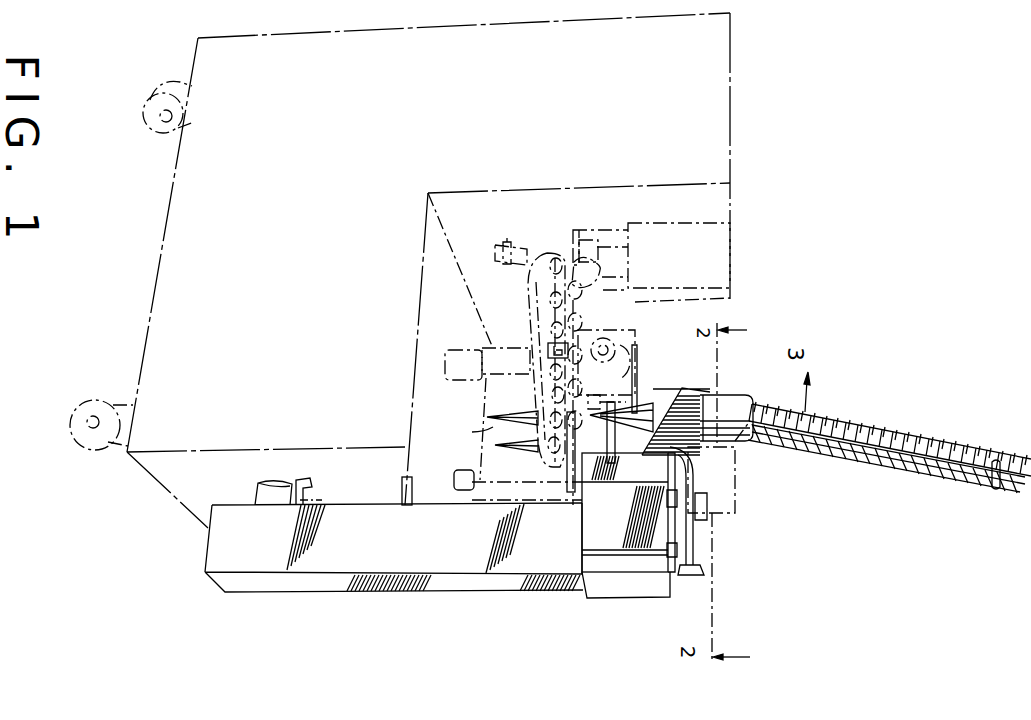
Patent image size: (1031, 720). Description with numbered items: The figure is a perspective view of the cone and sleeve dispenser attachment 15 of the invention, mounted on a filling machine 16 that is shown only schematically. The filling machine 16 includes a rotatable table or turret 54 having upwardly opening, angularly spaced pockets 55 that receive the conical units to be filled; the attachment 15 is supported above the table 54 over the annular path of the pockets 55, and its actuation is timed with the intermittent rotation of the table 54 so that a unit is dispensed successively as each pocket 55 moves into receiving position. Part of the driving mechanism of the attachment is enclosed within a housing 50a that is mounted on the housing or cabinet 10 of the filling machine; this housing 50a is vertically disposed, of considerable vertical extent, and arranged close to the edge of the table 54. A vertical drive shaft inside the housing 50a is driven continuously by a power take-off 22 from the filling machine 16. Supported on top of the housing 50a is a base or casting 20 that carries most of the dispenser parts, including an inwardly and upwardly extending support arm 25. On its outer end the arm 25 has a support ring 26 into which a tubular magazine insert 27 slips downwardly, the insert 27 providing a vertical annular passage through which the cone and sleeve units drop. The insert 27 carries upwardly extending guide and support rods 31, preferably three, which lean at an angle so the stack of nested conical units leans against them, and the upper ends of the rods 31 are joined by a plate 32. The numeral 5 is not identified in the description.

The housing or cabinet 10 is at (180, 326).
The filling machine 16 is at (192, 222).
The power take-off 22 is at (254, 496).
The rotatable table or turret 54 is at (530, 328).
The pockets 55 is at (558, 470).
The housing 50a is at (455, 586).
The base or casting 20 is at (610, 588).
The support arm 25 is at (668, 404).
The support ring 26 is at (688, 398).
The tubular magazine insert 27 is at (746, 396).
The dispenser attachment 15 is at (738, 445).
The conveyor 5 is at (950, 438).
The guide and support rods 31 is at (906, 468).
The plate 32 is at (996, 486).